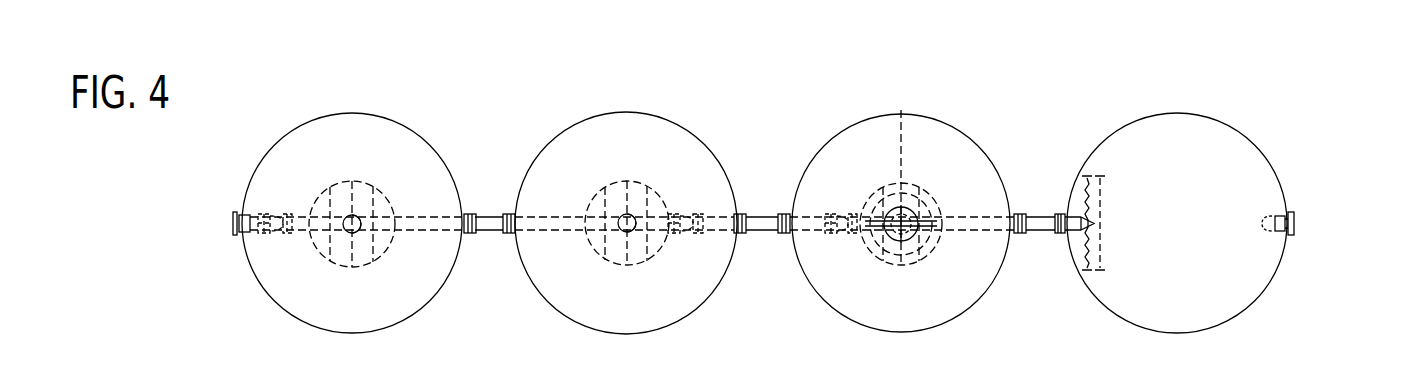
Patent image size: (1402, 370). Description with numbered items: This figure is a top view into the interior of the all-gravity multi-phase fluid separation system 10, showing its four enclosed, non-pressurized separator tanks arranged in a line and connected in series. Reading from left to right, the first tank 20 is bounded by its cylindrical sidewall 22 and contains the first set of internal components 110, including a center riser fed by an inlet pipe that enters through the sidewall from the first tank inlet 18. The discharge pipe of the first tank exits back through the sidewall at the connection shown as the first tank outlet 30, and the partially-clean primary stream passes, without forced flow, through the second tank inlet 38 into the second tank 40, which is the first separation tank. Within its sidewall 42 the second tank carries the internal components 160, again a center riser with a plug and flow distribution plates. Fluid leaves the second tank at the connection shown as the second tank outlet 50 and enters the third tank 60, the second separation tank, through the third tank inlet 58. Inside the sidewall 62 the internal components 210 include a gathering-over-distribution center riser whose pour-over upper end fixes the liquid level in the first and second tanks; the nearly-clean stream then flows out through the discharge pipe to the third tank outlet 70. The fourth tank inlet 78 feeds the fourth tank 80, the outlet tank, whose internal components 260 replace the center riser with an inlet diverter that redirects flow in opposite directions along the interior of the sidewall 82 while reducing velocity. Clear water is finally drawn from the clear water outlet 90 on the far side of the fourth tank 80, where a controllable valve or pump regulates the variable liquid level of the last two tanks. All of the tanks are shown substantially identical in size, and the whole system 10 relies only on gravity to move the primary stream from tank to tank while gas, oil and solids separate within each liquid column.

The all-gravity multi-phase fluid separation system 10 is at (1087, 76).
The first tank inlet 18 is at (235, 203).
The first tank 20 is at (360, 213).
The sidewall of first tank 22 is at (291, 318).
The first bearing 30 is at (463, 202).
The second tank inlet 38 is at (511, 247).
The second tank 40 is at (632, 213).
The sidewall of second tank 42 is at (566, 318).
The third bearing 50 is at (737, 202).
The third tank inlet 58 is at (787, 247).
The third tank 60 is at (908, 213).
The sidewall of third tank 62 is at (841, 318).
The third tank outlet 70 is at (1008, 202).
The fourth tank inlet 78 is at (1063, 247).
The fourth tank 80 is at (1183, 213).
The sidewall of fourth tank 82 is at (1115, 318).
The clear water outlet 90 is at (1303, 205).
The internal components of first tank 110 is at (318, 175).
The internal components of second tank 160 is at (608, 171).
The internal components of third tank 210 is at (881, 171).
The internal components of fourth tank 260 is at (1112, 179).